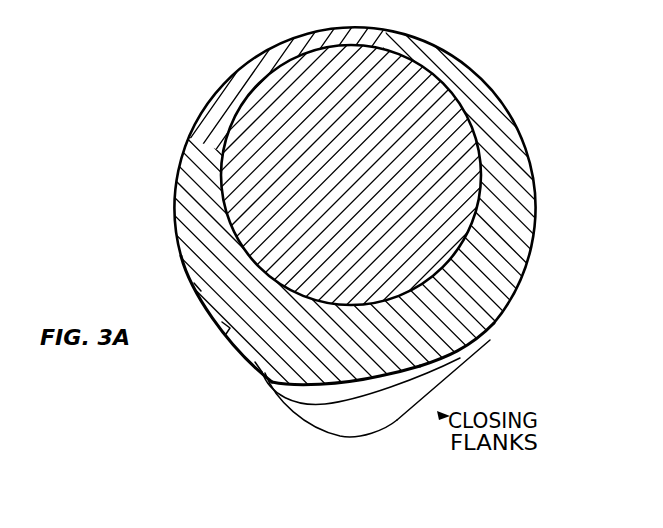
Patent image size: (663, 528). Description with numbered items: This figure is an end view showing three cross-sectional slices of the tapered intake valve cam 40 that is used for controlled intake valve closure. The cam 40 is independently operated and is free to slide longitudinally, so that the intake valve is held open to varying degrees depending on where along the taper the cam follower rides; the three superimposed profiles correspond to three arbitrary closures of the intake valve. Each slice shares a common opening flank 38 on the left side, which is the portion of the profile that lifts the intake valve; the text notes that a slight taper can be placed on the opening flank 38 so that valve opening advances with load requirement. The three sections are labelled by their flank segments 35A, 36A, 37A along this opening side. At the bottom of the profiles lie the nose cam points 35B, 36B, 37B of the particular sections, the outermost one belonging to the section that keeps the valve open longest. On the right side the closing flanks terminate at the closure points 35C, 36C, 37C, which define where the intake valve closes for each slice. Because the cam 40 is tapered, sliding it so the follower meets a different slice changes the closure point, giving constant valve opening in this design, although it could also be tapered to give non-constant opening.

The tapered intake valve cam 40 is at (347, 175).
The opening flank 38 is at (181, 256).
The opening flank of first cam profile 35A is at (237, 294).
The opening flank of second cam profile 36A is at (251, 318).
The opening flank of third cam profile 37A is at (258, 347).
The nose cam point 35B is at (270, 383).
The nose cam point 36B is at (305, 407).
The nose cam point 37B is at (331, 417).
The closure point 35C is at (445, 417).
The closure point 36C is at (445, 417).
The closure point 37C is at (445, 417).